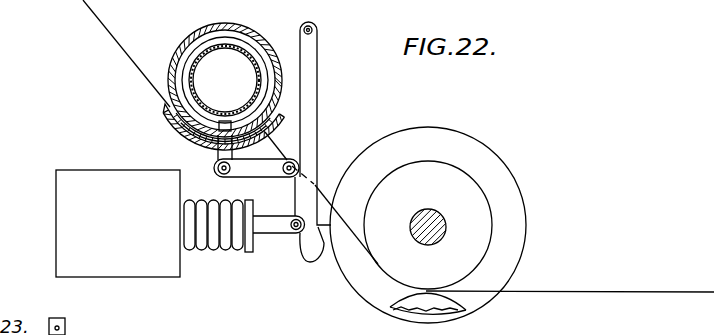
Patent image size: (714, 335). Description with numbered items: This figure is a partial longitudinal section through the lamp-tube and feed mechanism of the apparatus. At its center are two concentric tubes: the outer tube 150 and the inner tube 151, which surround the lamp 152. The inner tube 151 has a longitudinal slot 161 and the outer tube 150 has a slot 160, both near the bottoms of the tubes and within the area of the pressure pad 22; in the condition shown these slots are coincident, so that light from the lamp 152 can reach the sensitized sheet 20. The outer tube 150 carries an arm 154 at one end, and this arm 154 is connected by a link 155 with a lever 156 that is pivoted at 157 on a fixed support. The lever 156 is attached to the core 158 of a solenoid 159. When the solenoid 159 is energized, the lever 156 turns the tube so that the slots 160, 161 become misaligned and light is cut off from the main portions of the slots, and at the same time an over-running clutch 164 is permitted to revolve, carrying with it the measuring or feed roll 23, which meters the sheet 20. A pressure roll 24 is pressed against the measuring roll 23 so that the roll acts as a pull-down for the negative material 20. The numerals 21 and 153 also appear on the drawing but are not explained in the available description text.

The negative material 20 is at (117, 44).
The wheel 21 is at (178, 45).
The pressure pad 22 is at (178, 127).
The measuring roll 23 is at (494, 210).
The pressure roll 24 is at (392, 308).
The outer tube 150 is at (232, 26).
The inner tube 151 is at (257, 31).
The lamp 152 is at (257, 70).
The frame 153 is at (0, 14).
The arm 154 is at (214, 157).
The link 155 is at (236, 177).
The lever 156 is at (317, 90).
The pivot 157 is at (313, 30).
The core 158 is at (268, 236).
The solenoid 159 is at (154, 223).
The slot 160 is at (258, 124).
The longitudinal slot 161 is at (225, 121).
The over-running clutch 164 is at (480, 150).